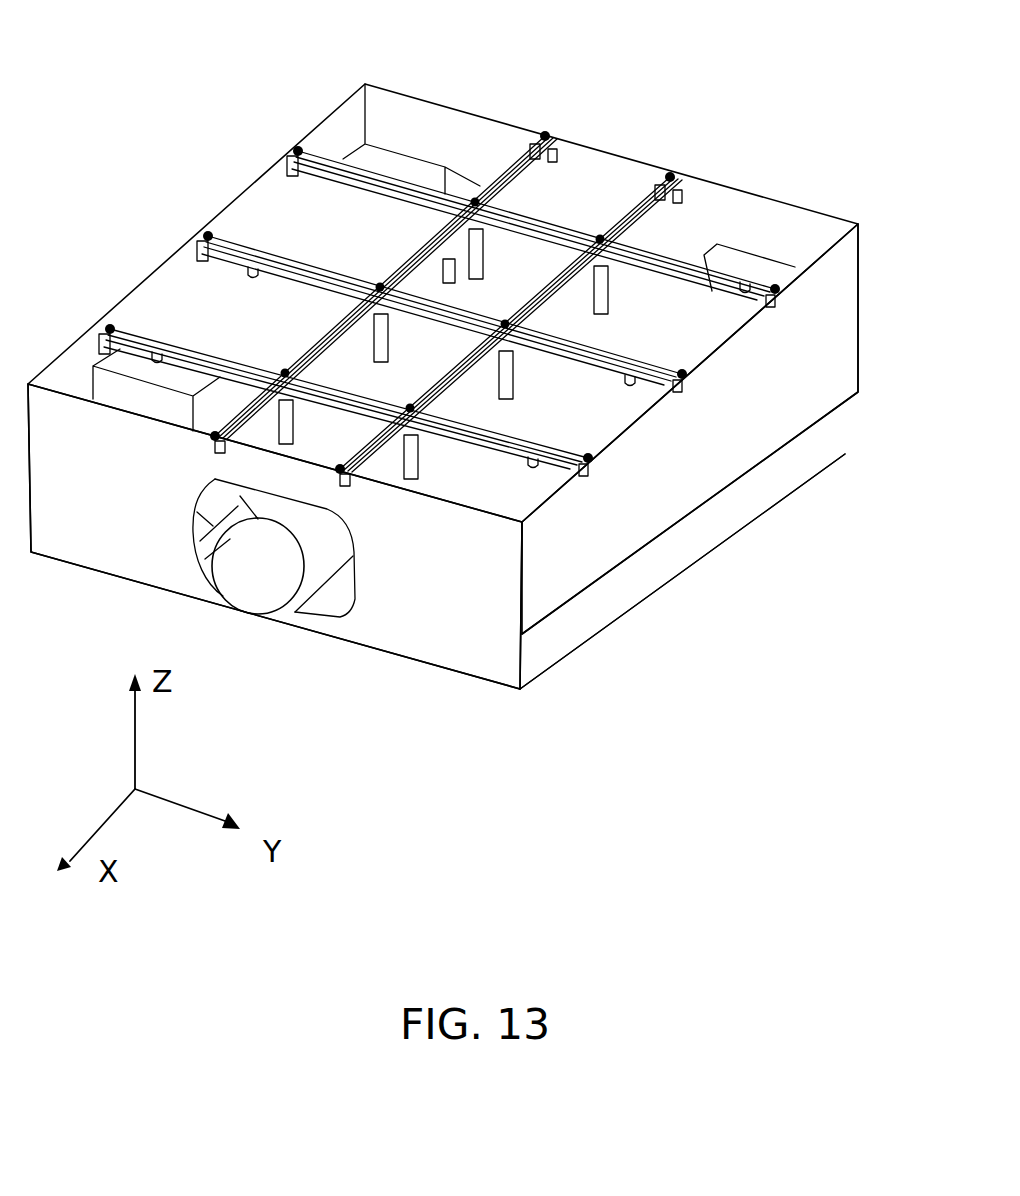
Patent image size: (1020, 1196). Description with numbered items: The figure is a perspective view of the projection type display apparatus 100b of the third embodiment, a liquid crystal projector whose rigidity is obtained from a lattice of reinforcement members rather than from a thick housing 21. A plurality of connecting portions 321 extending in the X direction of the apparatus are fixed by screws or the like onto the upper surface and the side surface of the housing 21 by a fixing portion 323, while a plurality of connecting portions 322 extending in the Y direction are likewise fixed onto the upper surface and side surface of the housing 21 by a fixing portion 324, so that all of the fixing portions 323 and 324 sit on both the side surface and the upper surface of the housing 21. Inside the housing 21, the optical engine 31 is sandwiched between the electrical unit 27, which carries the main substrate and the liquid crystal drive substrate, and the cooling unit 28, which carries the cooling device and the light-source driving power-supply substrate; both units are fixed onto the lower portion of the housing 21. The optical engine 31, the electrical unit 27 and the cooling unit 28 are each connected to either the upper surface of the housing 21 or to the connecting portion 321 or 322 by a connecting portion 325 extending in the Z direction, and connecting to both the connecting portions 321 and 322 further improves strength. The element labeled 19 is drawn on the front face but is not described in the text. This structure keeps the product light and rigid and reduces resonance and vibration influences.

The projection type display apparatus 100b is at (900, 42).
The cylindrical connector 19 is at (318, 558).
The housing 21 is at (477, 588).
The electrical unit 27 is at (383, 167).
The cooling unit 28 is at (597, 417).
The optical engine 31 is at (498, 303).
The connecting portion 321 is at (603, 238).
The connecting portion 322 is at (650, 250).
The fixing portion 323 is at (665, 180).
The fixing portion 324 is at (775, 292).
The connecting portion 325 is at (440, 240).